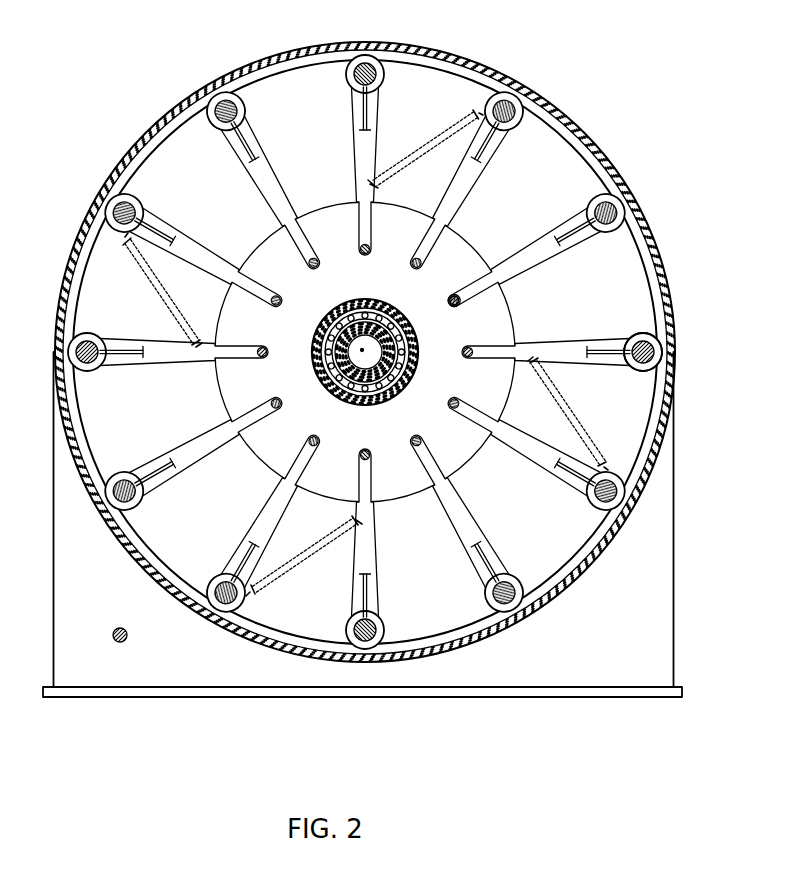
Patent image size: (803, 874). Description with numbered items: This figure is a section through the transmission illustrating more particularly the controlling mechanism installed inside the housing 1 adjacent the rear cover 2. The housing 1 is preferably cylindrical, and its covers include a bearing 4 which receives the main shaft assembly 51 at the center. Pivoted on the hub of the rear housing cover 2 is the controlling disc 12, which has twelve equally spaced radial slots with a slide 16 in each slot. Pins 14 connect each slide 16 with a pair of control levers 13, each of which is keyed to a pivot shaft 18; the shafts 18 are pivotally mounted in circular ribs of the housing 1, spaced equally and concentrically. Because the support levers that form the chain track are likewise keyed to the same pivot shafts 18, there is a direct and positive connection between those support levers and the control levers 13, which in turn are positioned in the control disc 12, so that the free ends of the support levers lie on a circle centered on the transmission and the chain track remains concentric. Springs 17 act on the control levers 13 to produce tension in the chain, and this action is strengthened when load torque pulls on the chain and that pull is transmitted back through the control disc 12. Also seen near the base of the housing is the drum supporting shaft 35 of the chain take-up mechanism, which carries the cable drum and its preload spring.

The housing 1 is at (439, 51).
The rear cover 2 is at (666, 622).
The bearing 4 is at (350, 405).
The controlling disc 12 is at (511, 326).
The control levers 13 is at (546, 256).
The pins 14 is at (456, 308).
The slides 16 is at (456, 296).
The springs 17 is at (580, 412).
The pivot shafts 18 is at (637, 372).
The drum supporting shaft 35 is at (127, 641).
The main shaft assembly 51 is at (336, 352).